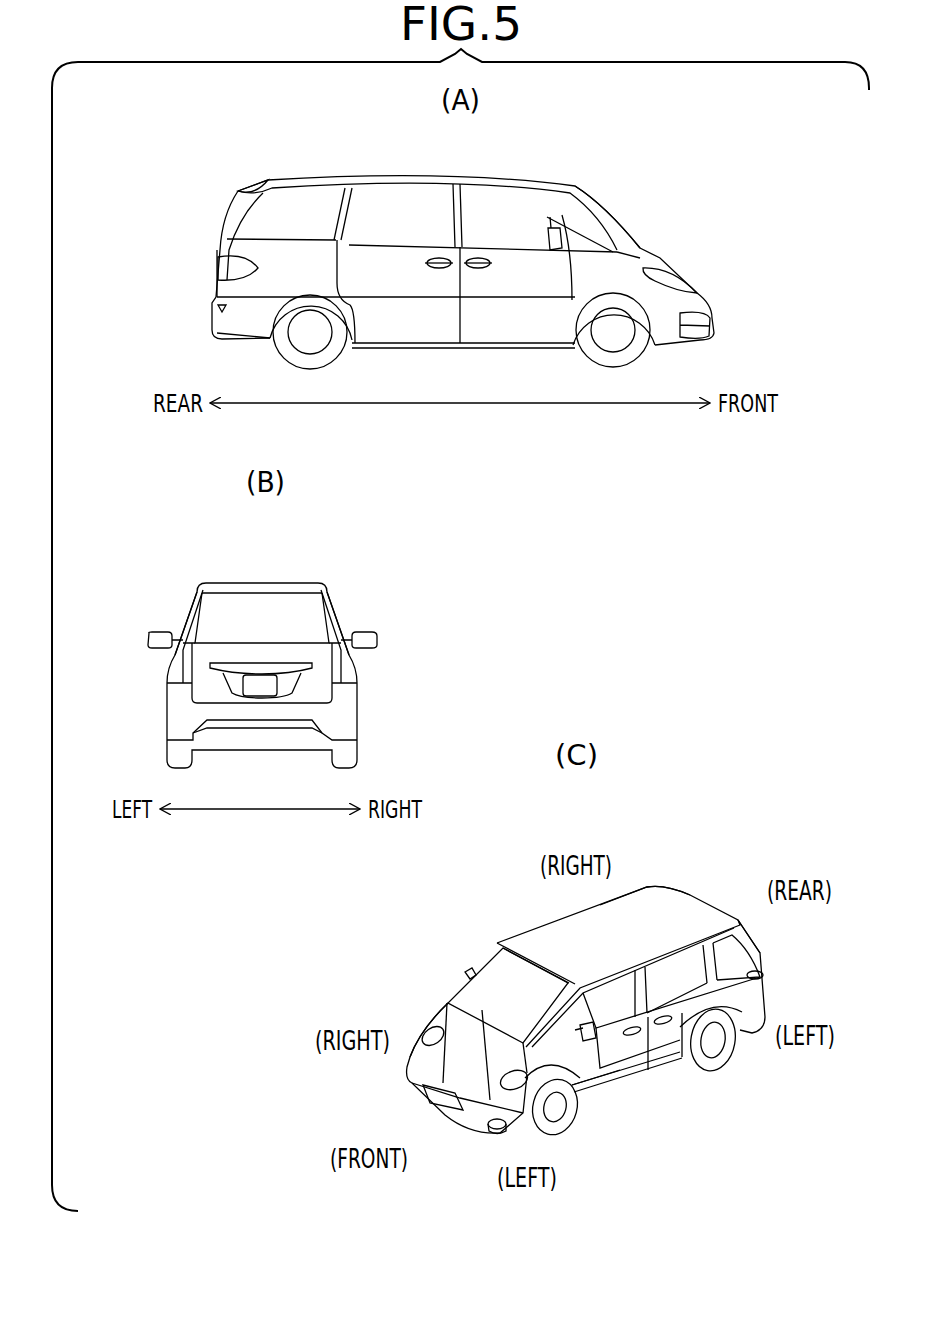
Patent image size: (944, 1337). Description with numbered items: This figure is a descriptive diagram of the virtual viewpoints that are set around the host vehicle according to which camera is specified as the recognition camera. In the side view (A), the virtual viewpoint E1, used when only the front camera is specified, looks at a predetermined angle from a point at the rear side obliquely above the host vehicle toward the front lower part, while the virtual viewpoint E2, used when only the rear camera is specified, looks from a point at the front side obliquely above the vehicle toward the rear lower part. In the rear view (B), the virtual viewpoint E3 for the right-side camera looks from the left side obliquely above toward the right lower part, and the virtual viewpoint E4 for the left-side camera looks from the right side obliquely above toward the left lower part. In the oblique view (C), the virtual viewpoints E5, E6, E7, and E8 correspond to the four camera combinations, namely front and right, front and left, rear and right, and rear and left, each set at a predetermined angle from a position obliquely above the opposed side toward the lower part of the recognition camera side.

The virtual viewpoint E1 is at (249, 162).
The virtual viewpoint E2 is at (610, 183).
The virtual viewpoint E3 is at (146, 571).
The virtual viewpoint E4 is at (380, 571).
The virtual viewpoint E5 is at (451, 973).
The virtual viewpoint E6 is at (591, 1112).
The virtual viewpoint E7 is at (651, 874).
The virtual viewpoint E8 is at (766, 934).